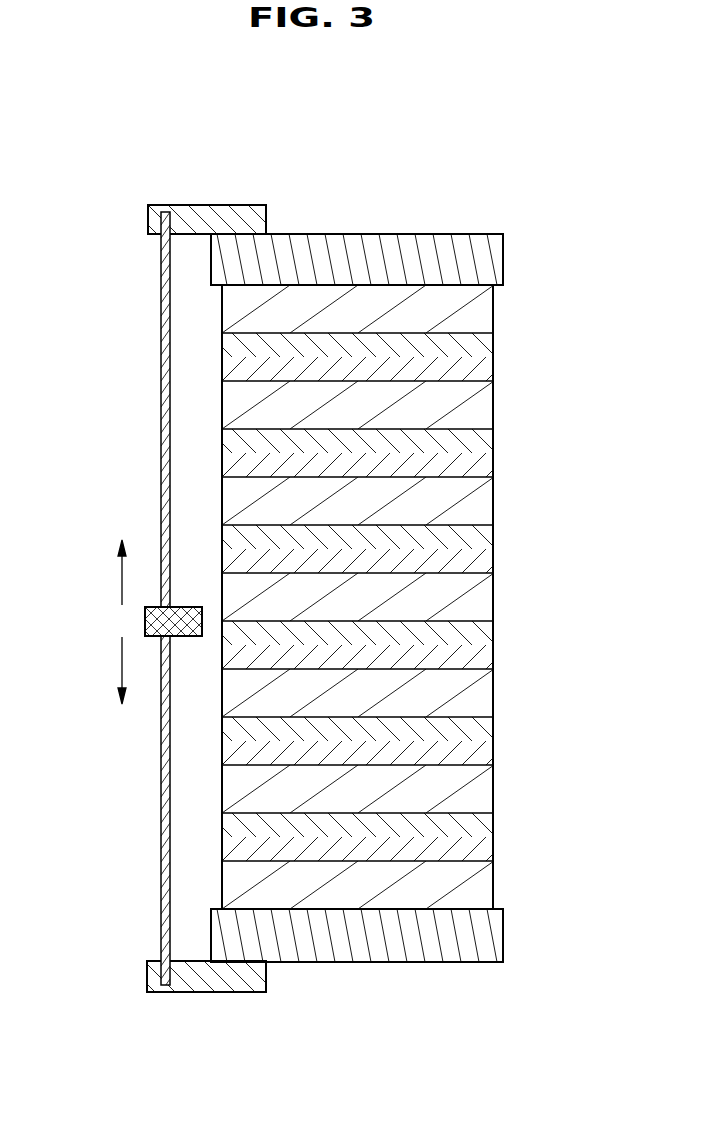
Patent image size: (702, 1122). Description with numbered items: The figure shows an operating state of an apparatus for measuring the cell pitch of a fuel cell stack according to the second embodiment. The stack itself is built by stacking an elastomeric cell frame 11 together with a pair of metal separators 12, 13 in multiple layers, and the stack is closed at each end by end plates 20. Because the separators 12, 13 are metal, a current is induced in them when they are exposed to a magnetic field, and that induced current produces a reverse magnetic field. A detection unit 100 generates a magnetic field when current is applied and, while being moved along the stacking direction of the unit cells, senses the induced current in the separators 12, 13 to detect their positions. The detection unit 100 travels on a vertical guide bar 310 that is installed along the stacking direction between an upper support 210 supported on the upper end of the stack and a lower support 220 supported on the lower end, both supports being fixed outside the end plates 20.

The elastomeric cell frame 11 is at (478, 308).
The separator 12 is at (480, 343).
The separator 13 is at (483, 368).
The end plate 20 is at (490, 258).
The detection unit 100 is at (157, 620).
The upper support 210 is at (212, 214).
The lower support 220 is at (220, 986).
The vertical guide bar 310 is at (162, 873).